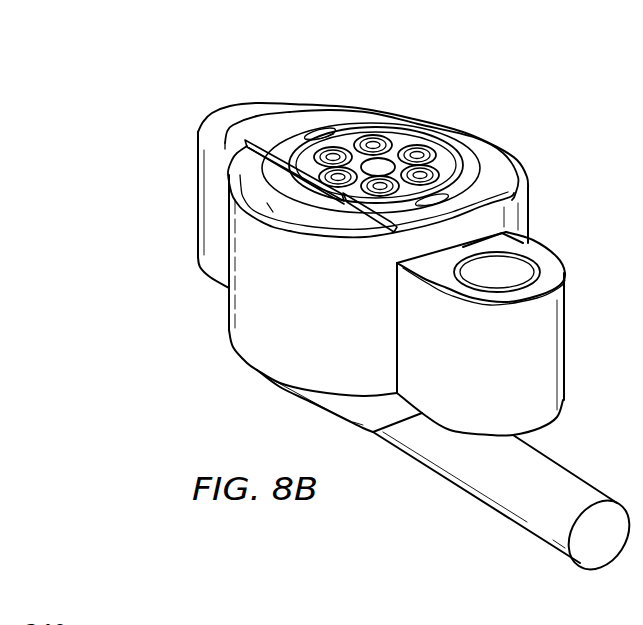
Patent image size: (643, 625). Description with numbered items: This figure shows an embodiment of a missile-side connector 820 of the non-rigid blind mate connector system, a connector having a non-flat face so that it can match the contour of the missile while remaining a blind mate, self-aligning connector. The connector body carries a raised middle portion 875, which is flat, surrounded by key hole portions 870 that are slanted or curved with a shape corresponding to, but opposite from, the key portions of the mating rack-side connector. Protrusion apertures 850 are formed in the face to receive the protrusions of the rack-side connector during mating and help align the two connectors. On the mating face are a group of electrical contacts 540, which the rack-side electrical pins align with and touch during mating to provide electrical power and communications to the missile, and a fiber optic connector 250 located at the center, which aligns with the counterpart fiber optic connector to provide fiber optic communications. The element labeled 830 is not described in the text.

The missile-side connector 820 is at (238, 319).
The top flange ring 830 is at (248, 177).
The key hole portion 870 is at (288, 189).
The raised middle portion 875 is at (470, 182).
The protrusion aperture 850 is at (318, 128).
The electrical contact 540 is at (375, 143).
The fiber optic connector 250 is at (379, 165).